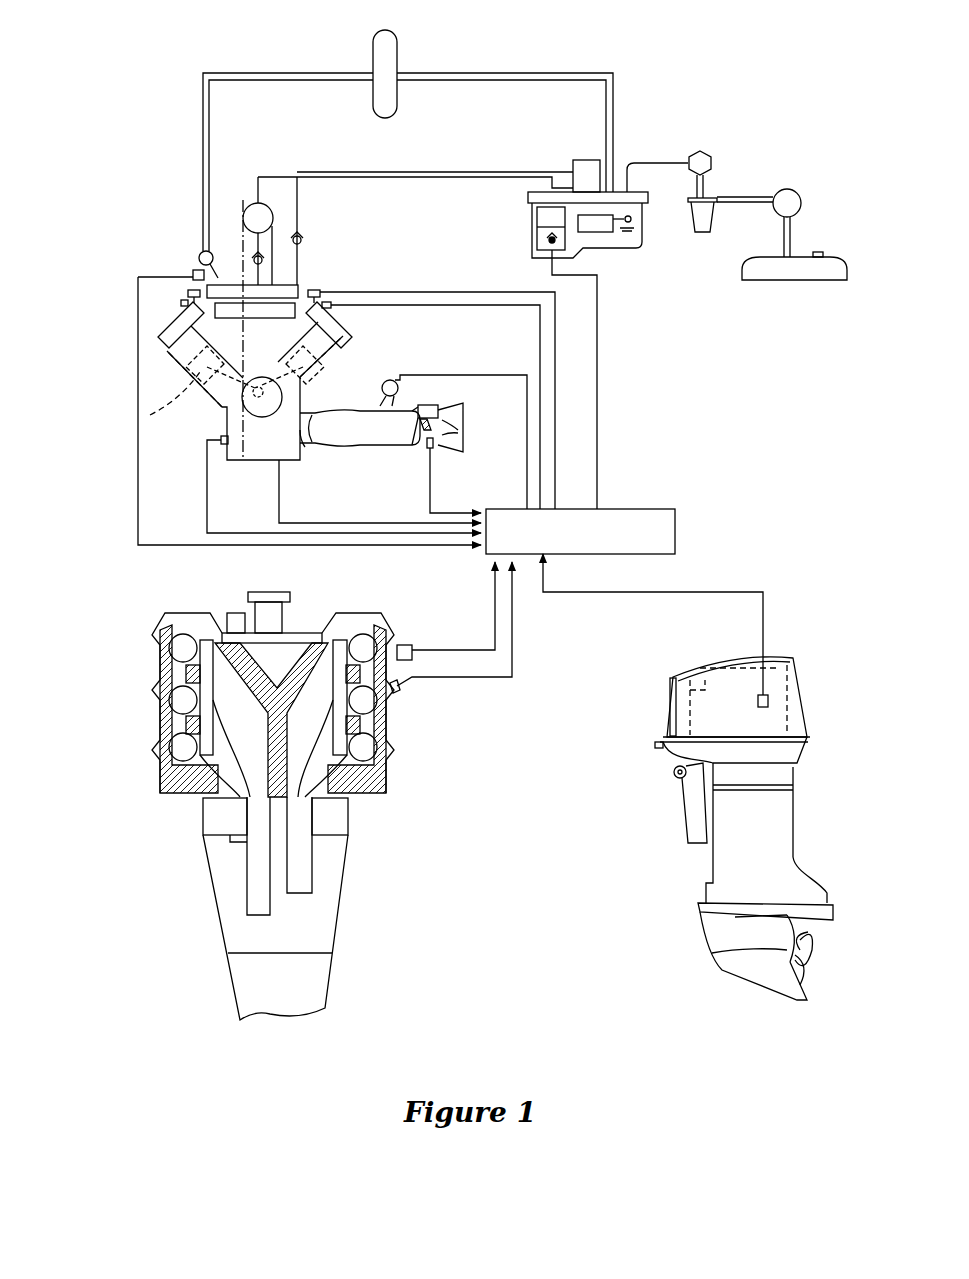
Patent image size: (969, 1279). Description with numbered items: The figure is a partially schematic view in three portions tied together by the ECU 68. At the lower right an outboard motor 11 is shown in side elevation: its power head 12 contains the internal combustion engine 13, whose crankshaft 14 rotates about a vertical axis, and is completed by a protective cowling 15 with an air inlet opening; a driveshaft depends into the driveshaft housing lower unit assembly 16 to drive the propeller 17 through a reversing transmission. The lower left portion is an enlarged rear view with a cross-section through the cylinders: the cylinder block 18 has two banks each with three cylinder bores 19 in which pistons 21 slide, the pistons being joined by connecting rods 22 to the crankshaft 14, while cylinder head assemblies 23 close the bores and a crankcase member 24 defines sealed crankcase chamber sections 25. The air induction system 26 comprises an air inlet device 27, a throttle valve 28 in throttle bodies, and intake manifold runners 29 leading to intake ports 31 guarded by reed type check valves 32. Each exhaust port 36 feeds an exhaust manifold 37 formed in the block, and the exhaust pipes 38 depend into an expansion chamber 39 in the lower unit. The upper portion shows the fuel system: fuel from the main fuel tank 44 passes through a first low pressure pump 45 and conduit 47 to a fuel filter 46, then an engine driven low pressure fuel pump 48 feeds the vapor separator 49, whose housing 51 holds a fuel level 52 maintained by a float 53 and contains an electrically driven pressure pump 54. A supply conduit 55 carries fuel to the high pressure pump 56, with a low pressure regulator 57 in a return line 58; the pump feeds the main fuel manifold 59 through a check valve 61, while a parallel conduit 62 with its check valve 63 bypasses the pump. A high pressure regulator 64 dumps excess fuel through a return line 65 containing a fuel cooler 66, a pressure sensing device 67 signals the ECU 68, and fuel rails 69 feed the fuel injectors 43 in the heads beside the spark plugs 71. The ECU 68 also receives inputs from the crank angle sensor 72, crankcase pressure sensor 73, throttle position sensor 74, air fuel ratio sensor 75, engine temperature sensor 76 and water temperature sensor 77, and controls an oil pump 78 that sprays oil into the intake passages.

The outboard motor 11 is at (762, 811).
The power head 12 is at (812, 728).
The internal combustion engine 13 is at (446, 610).
The crankshaft 14 is at (226, 420).
The protective cowling 15 is at (690, 675).
The driveshaft housing lower unit assembly 16 is at (340, 940).
The propeller 17 is at (815, 968).
The cylinder block 18 is at (320, 378).
The cylinder bores 19 is at (200, 356).
The pistons 21 is at (175, 350).
The connecting rods 22 is at (150, 415).
The cylinder head assemblies 23 is at (168, 336).
The crankcase member 24 is at (250, 462).
The crankcase chamber sections 25 is at (240, 444).
The air induction system 26 is at (455, 395).
The air inlet device 27 is at (455, 410).
The throttle valve 28 is at (455, 430).
The intake manifold runners 29 is at (398, 446).
The intake ports 31 is at (305, 447).
The reed type check valves 32 is at (314, 443).
The exhaust port 36 is at (215, 803).
The exhaust manifolds 37 is at (225, 850).
The exhaust pipes 38 is at (245, 895).
The expansion chamber 39 is at (260, 941).
The fuel injectors 43 is at (186, 292).
The main fuel tank 44 is at (795, 282).
The first low pressure pump 45 is at (800, 192).
The fuel filter 46 is at (703, 224).
The conduit 47 is at (705, 152).
The low pressure fuel pump 48 is at (742, 197).
The vapor separator 49 is at (630, 143).
The vapor separator housing 51 is at (530, 200).
The fuel level 52 is at (610, 252).
The float 53 is at (580, 228).
The electrically driven pressure pump 54 is at (540, 218).
The supply conduit 55 is at (372, 172).
The high pressure pump 56 is at (256, 203).
The low pressure regulator 57 is at (586, 160).
The return line 58 is at (556, 175).
The main fuel manifold 59 is at (302, 236).
The check valve 61 is at (224, 248).
The parallel conduit 62 is at (300, 200).
The check valve 63 is at (262, 262).
The high pressure regulator 64 is at (195, 270).
The return line 65 is at (294, 73).
The fuel heat exchanger or cooler 66 is at (400, 60).
The pressure sensing device 67 is at (184, 300).
The ECU 68 is at (628, 509).
The fuel rails 69 is at (322, 290).
The spark plugs 71 is at (186, 305).
The crank angle sensor 72 is at (283, 464).
The crankcase pressure sensor 73 is at (207, 440).
The throttle position sensor 74 is at (435, 450).
The air fuel ratio sensor 75 is at (412, 650).
The engine temperature sensor 76 is at (398, 690).
The water temperature sensor 77 is at (770, 700).
The oil pump 78 is at (405, 380).